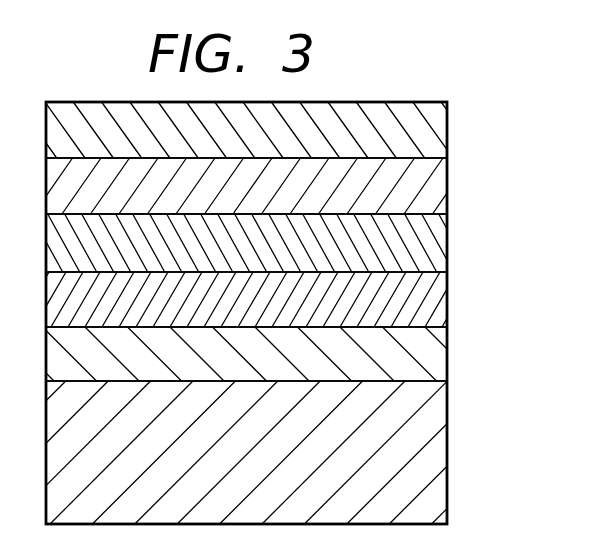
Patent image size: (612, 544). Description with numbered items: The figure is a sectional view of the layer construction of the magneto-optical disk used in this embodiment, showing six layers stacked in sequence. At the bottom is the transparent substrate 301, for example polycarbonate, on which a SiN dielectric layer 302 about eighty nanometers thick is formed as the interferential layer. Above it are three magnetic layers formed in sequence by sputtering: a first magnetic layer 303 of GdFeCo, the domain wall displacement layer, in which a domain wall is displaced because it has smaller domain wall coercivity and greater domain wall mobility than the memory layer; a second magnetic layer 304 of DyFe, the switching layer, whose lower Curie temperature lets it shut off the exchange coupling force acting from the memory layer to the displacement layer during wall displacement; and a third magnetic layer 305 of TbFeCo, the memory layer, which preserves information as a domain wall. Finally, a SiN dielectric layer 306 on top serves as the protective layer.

The transparent substrate 301 is at (430, 418).
The dielectric layer 302 is at (430, 362).
The first magnetic layer 303 is at (430, 302).
The second magnetic layer 304 is at (430, 247).
The third magnetic layer 305 is at (430, 190).
The dielectric layer 306 is at (430, 131).